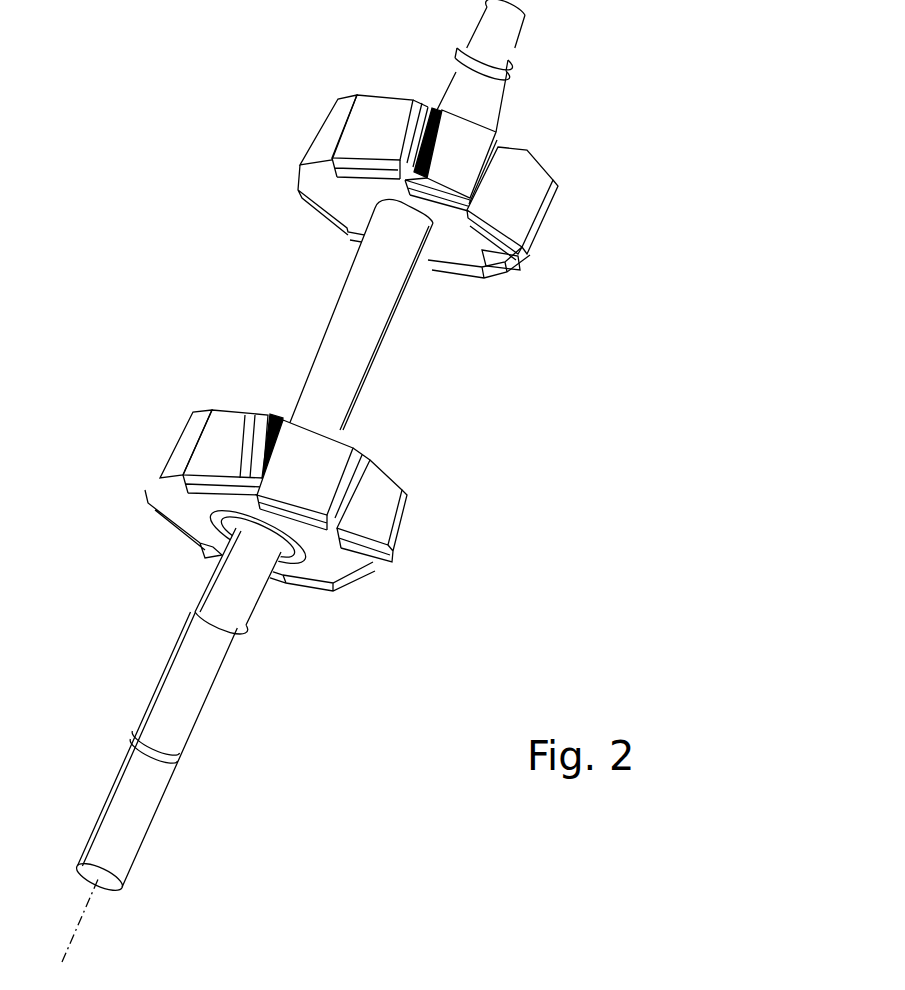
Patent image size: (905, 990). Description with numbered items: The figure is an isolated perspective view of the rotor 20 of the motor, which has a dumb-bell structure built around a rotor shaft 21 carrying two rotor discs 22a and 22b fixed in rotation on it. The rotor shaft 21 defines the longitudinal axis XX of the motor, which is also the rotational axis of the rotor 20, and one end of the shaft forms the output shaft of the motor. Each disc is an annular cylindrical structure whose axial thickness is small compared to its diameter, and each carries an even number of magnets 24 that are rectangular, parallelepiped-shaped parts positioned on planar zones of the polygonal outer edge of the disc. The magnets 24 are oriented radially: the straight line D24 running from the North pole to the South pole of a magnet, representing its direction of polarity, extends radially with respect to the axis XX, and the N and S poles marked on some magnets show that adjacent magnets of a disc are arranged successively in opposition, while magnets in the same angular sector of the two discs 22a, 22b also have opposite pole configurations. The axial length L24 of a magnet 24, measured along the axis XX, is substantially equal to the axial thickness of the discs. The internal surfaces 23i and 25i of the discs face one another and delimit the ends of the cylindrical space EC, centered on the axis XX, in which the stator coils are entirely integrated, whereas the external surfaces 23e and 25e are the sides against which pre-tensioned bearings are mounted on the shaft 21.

The rotor 20 is at (198, 222).
The rotor shaft 21 is at (203, 677).
The rotor disc 22a is at (318, 563).
The rotor disc 22b is at (455, 243).
The internal surface 23i is at (252, 402).
The external surface 23e is at (200, 516).
The magnet 24 is at (528, 178).
The external surface 25e is at (410, 92).
The internal surface 25i is at (352, 210).
The direction of polarity D24 is at (373, 128).
The axial length of a magnet L24 is at (300, 173).
The cylindrical space EC is at (413, 382).
The longitudinal axis XX is at (84, 919).